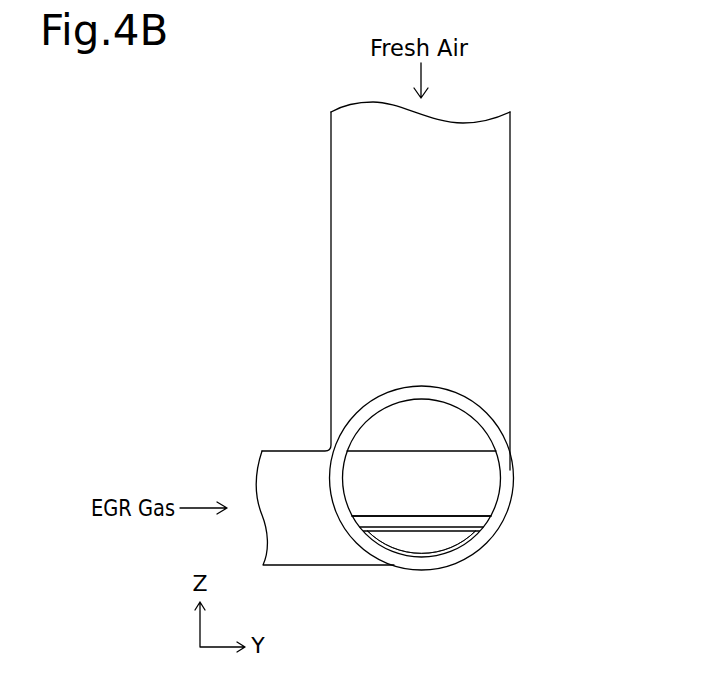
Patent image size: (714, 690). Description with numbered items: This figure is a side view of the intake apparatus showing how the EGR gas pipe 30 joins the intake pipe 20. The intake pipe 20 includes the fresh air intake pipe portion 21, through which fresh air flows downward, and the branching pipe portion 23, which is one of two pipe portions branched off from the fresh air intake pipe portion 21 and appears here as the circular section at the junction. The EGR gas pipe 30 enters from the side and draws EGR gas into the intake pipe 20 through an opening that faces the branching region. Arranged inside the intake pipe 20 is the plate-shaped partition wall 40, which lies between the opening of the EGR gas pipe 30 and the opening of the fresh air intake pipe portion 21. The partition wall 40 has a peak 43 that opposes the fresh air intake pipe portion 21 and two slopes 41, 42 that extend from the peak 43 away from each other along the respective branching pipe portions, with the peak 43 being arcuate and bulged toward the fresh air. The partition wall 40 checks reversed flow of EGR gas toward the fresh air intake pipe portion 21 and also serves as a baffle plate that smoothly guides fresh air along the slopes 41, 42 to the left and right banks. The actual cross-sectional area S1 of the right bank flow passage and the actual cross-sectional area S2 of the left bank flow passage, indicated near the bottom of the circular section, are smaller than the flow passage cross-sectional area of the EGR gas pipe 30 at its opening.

The intake pipe 20 is at (331, 150).
The fresh air intake pipe portion 21 is at (331, 228).
The branching pipe portion 23 is at (453, 390).
The EGR gas pipe 30 is at (291, 450).
The partition wall 40 is at (413, 450).
The slope 41 is at (483, 503).
The slope 42 is at (458, 537).
The peak 43 is at (383, 450).
The actual cross-sectional area of the right bank flow passage S1 is at (463, 540).
The actual cross-sectional area of the left bank flow passage S2 is at (422, 542).